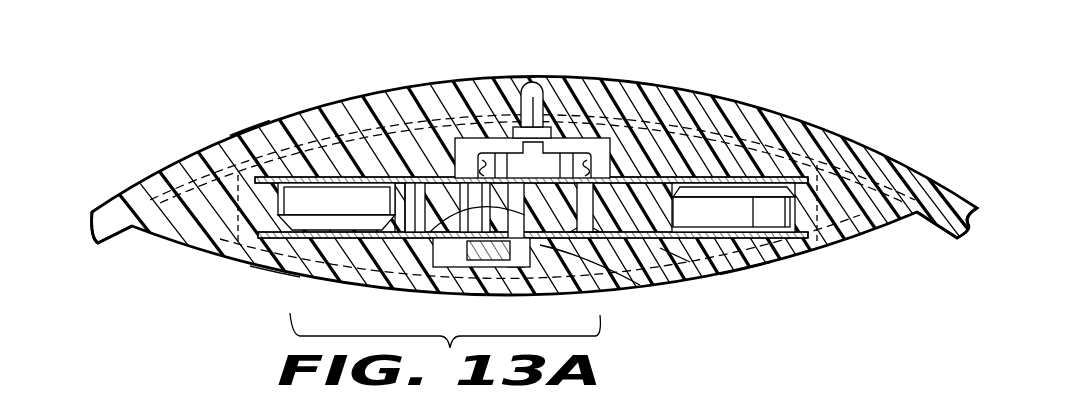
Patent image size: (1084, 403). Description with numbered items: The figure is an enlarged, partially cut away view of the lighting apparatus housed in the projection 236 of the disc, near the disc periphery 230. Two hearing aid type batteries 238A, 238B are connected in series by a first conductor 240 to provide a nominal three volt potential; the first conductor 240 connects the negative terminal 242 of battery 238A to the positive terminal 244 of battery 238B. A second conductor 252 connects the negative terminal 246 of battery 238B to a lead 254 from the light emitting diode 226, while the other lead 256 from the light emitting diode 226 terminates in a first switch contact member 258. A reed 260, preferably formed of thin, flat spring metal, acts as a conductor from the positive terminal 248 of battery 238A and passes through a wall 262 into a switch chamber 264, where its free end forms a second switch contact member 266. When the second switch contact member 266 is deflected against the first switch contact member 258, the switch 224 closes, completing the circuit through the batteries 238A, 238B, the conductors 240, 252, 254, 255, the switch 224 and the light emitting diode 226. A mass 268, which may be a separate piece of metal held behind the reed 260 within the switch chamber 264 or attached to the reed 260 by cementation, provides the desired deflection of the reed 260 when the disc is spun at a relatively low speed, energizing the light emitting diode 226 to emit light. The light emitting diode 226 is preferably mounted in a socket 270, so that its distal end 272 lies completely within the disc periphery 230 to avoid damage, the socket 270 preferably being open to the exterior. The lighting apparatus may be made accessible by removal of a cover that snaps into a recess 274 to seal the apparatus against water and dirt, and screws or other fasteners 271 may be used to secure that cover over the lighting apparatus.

The switch 224 is at (448, 348).
The light emitting diode 226 is at (548, 108).
The disc periphery 230 is at (893, 162).
The projection 236 is at (765, 220).
The hearing aid type battery 238A is at (205, 252).
The hearing aid type battery 238B is at (790, 250).
The first conductor 240 is at (292, 178).
The negative terminal 242 is at (242, 134).
The positive terminal 244 is at (760, 177).
The negative terminal 246 is at (745, 277).
The positive terminal 248 is at (272, 272).
The second conductor 252 is at (668, 245).
The lead 254 is at (590, 150).
The conductor 255 is at (478, 148).
The lead 256 is at (477, 212).
The first switch contact member 258 is at (400, 245).
The reed 260 is at (392, 232).
The wall 262 is at (402, 175).
The switch chamber 264 is at (600, 252).
The second switch contact member 266 is at (445, 265).
The mass 268 is at (517, 270).
The socket 270 is at (523, 88).
The fasteners 271 is at (240, 230).
The distal end 272 is at (528, 80).
The recess 274 is at (850, 175).